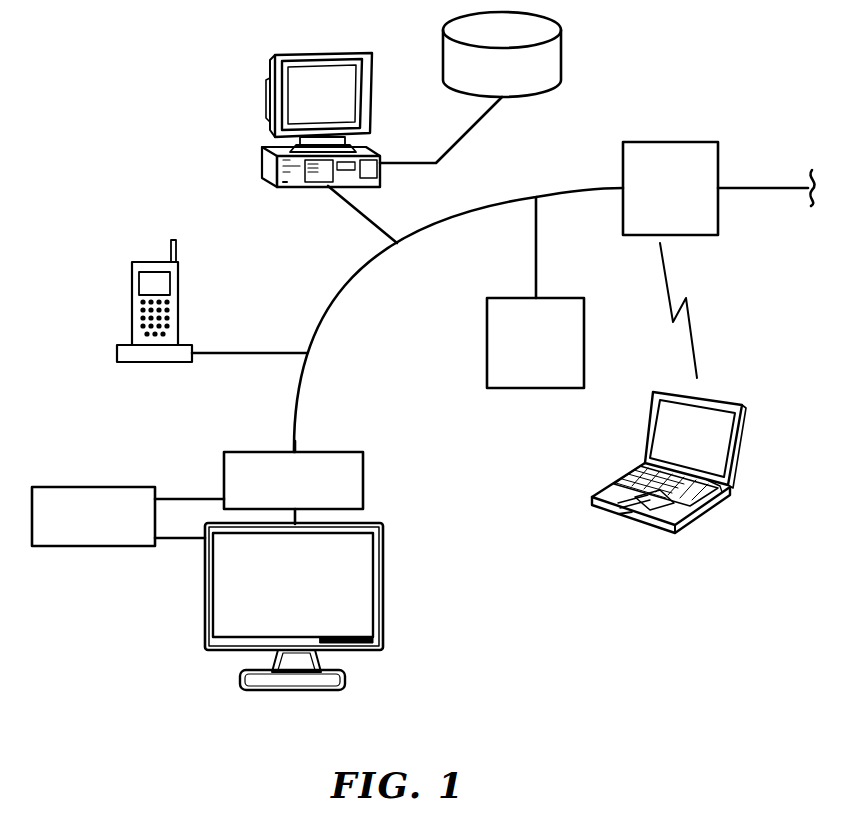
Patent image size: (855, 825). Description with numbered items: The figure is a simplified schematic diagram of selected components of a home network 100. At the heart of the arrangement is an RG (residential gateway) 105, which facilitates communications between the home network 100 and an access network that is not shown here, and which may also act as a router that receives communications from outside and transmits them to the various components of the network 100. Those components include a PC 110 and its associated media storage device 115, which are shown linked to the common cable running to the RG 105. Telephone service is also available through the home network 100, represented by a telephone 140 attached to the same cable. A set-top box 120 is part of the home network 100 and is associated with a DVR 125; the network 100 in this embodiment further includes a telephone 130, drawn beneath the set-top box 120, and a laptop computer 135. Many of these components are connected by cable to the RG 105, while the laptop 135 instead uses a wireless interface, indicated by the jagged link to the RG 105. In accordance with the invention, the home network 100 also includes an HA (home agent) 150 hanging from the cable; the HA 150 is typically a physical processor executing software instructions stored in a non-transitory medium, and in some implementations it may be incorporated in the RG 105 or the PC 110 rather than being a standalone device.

The home network 100 is at (78, 128).
The residential gateway 105 is at (670, 142).
The PC 110 is at (262, 153).
The media storage device 115 is at (563, 57).
The set-top box 120 is at (364, 482).
The DVR 125 is at (93, 487).
The telephone 130 is at (378, 586).
The laptop computer 135 is at (700, 517).
The telephone 140 is at (132, 302).
The home agent 150 is at (536, 390).